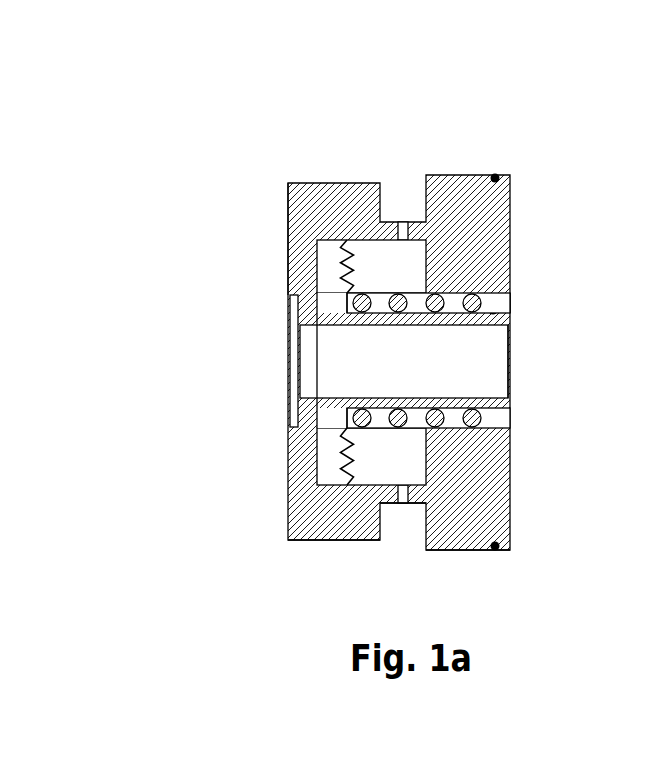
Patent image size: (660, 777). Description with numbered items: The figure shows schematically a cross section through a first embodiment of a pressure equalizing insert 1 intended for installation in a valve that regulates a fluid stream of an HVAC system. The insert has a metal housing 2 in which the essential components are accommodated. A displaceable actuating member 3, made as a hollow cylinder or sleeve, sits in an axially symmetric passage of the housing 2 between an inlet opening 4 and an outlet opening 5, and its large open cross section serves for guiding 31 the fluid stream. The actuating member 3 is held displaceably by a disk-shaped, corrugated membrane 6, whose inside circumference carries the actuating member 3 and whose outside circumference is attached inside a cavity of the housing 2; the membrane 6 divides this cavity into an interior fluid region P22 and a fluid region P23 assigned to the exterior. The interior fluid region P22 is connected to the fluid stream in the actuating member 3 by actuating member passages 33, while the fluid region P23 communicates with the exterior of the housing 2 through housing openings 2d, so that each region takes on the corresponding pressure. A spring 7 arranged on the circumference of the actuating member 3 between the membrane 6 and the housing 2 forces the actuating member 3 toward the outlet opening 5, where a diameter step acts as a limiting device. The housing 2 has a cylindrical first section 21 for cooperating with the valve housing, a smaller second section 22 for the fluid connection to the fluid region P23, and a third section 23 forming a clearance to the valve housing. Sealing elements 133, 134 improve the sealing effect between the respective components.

The pressure equalizing insert 1 is at (379, 355).
The housing 2 is at (371, 340).
The housing openings 2d is at (400, 222).
The actuating member 3 is at (401, 269).
The inlet opening 4 is at (521, 365).
The outlet opening 5 is at (281, 363).
The membrane 6 is at (340, 262).
The spring 7 is at (403, 293).
The first section of the housing 21 is at (472, 563).
The second section of the housing 22 is at (400, 563).
The third section of the housing 23 is at (336, 563).
The guiding of a fluid stream 31 is at (464, 373).
The actuating member passages 33 is at (352, 317).
The sealing element 133 is at (511, 300).
The sealing element 134 is at (498, 177).
The interior fluid region P22 is at (288, 232).
The fluid region assigned to the exterior P23 is at (388, 260).